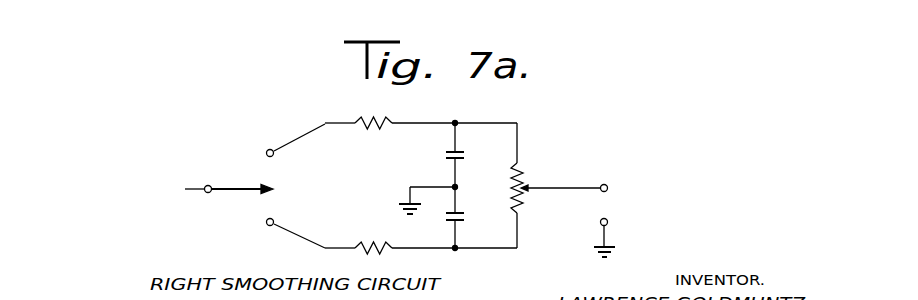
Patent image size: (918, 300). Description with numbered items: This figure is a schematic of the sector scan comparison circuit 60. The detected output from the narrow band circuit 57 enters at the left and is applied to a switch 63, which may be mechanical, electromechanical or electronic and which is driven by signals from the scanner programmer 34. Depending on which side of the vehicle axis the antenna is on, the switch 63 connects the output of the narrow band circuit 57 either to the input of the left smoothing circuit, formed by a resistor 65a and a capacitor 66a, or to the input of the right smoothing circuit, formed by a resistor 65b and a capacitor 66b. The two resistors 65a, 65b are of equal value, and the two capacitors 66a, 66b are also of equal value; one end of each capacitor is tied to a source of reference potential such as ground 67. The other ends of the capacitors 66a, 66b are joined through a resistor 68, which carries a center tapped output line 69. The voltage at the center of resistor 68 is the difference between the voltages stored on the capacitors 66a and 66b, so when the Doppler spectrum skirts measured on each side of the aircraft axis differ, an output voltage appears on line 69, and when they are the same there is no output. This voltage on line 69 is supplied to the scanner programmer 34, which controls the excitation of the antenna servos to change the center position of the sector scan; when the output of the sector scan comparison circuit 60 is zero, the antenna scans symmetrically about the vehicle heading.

The sector scan comparison circuit 60 is at (337, 121).
The narrow band circuit 57 is at (118, 201).
The switch 63 is at (239, 188).
The resistor 65a is at (367, 128).
The resistor 65b is at (366, 244).
The capacitor 66a is at (464, 160).
The capacitor 66b is at (462, 217).
The ground 67 is at (400, 207).
The resistor 68 is at (524, 205).
The center tapped output line 69 is at (586, 170).
The scanner programmer 34 is at (708, 190).